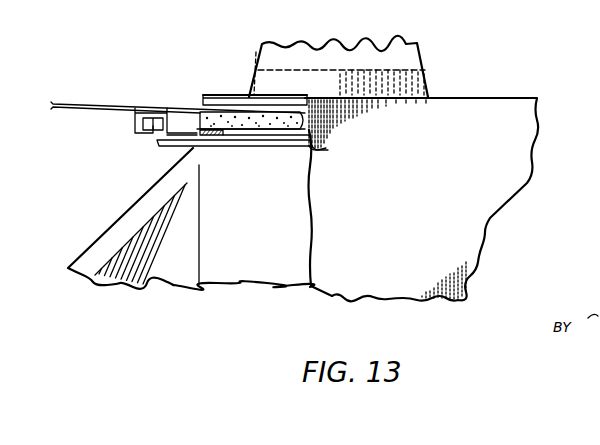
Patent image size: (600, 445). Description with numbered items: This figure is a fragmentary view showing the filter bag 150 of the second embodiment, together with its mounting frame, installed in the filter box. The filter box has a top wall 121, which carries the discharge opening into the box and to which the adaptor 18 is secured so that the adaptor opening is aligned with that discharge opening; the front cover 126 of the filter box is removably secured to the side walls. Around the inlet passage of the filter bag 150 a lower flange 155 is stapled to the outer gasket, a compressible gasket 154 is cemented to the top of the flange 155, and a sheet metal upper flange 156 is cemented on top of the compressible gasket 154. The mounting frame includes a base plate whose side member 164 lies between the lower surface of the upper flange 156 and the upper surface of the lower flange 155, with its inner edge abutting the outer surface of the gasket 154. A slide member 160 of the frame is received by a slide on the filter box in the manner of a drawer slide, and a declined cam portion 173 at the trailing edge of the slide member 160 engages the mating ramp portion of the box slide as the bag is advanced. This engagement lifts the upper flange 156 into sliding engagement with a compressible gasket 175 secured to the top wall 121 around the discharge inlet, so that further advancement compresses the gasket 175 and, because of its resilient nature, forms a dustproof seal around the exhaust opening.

The adaptor 18 is at (432, 72).
The top wall 121 is at (100, 91).
The front cover 126 is at (474, 230).
The filter bag 150 is at (110, 215).
The compressible gasket 154 is at (317, 150).
The flange 155 is at (246, 147).
The upper flange 156 is at (307, 128).
The slide member 160 is at (148, 128).
The side member 164 is at (190, 128).
The declined cam portion 173 is at (145, 131).
The compressible gasket 175 is at (258, 124).